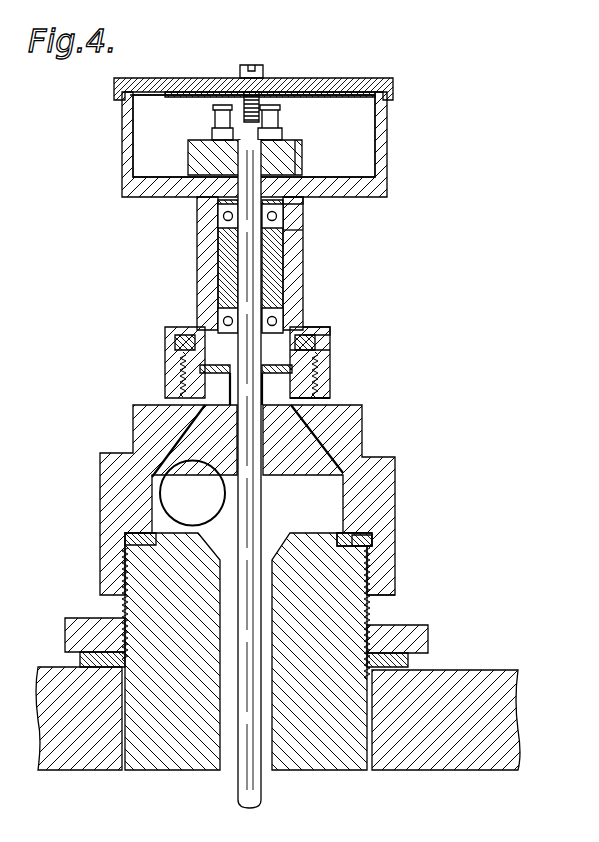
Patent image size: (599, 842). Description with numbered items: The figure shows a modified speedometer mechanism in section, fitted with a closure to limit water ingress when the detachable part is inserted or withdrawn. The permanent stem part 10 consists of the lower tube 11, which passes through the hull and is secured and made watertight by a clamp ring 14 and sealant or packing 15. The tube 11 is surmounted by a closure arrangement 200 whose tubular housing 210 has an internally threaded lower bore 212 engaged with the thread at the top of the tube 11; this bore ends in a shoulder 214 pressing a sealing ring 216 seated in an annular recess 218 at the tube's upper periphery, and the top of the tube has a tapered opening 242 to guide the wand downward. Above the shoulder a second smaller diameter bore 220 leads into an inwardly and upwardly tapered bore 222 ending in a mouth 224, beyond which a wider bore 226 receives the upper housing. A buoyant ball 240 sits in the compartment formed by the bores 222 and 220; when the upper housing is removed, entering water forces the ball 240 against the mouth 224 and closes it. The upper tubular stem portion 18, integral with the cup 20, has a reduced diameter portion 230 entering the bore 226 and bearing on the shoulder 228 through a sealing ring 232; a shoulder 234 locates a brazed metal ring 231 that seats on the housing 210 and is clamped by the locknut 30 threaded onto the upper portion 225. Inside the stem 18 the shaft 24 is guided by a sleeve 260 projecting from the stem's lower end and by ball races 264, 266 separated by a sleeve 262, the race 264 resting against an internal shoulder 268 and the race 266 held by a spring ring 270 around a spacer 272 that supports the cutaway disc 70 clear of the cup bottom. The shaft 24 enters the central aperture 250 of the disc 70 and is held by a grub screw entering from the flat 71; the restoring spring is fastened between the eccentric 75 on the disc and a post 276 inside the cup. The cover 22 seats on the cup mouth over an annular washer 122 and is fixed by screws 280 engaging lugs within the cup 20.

The cover 22 is at (360, 82).
The annular washer 122 is at (360, 94).
The cup 20 is at (380, 181).
The eccentric 75 is at (318, 125).
The screw 280 is at (264, 70).
The cutaway disc 70 is at (188, 150).
The central aperture 250 is at (236, 152).
The flat 71 is at (308, 155).
The post 276 is at (212, 136).
The upper tubular stem portion 18 is at (303, 297).
The sleeve 262 is at (227, 265).
The ball race 266 is at (222, 208).
The ball race 264 is at (222, 298).
The spacer 272 is at (304, 200).
The spring ring 270 is at (305, 238).
The wider bore 226 is at (185, 330).
The internal shoulder 268 is at (178, 346).
The upper portion of the housing 225 is at (180, 372).
The locknut 30 is at (328, 328).
The metal ring 231 is at (332, 338).
The shoulder 234 is at (305, 313).
The reduced diameter portion 230 is at (332, 345).
The sealing ring 232 is at (320, 370).
The shoulder 228 is at (323, 402).
The mouth 224 is at (218, 398).
The sleeve 260 is at (268, 402).
The tapered bore 222 is at (180, 437).
The buoyant ball 240 is at (180, 488).
The tubular housing 210 is at (385, 494).
The closure arrangement 200 is at (456, 472).
The second smaller diameter bore 220 is at (138, 524).
The sealing ring 216 is at (357, 535).
The shoulder 214 is at (372, 540).
The annular recess 218 is at (370, 560).
The tapered opening 242 is at (195, 565).
The internally threaded lower bore 212 is at (394, 594).
The stem part 10 is at (402, 620).
The clamp ring 14 is at (430, 634).
The sealant or packing 15 is at (410, 662).
The tube 11 is at (327, 762).
The shaft 24 is at (243, 790).